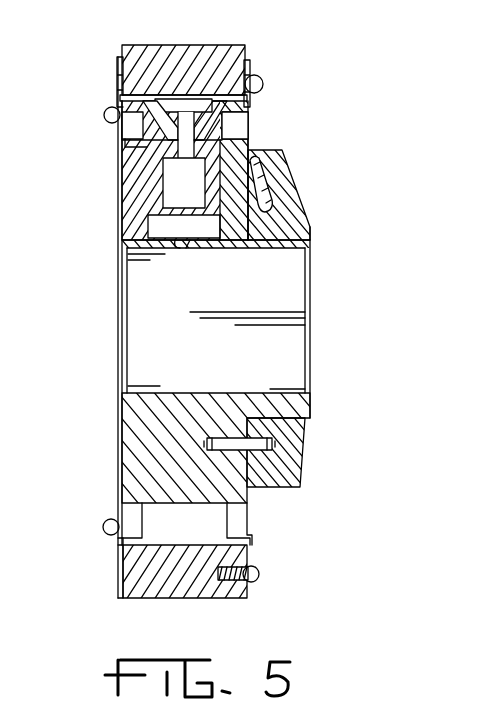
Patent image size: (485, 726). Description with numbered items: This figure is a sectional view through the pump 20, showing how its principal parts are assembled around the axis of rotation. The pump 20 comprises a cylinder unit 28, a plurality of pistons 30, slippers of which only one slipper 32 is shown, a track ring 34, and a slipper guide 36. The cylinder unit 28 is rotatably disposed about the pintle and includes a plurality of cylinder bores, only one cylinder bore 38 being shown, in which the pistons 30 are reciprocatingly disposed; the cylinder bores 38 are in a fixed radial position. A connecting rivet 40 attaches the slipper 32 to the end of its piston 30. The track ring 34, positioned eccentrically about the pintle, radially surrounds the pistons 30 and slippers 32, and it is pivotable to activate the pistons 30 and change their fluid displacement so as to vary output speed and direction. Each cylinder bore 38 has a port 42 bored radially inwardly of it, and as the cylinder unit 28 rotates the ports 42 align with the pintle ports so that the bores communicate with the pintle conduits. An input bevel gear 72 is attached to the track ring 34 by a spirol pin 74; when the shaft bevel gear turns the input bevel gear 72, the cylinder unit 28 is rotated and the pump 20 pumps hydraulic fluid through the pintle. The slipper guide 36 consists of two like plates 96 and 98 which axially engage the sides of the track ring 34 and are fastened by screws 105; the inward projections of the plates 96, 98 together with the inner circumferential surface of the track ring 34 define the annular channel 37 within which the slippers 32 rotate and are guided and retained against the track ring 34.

The pump 20 is at (108, 319).
The cylinder unit 28 is at (169, 456).
The piston 30 is at (150, 184).
The slipper 32 is at (122, 96).
The track ring 34 is at (197, 79).
The slipper guide 36 is at (262, 66).
The annular channel 37 is at (248, 537).
The cylinder bore 38 is at (232, 162).
The connecting rivet 40 is at (122, 150).
The port 42 is at (176, 253).
The input bevel gear 72 is at (280, 192).
The spirol pin 74 is at (263, 449).
The slipper guide plate 96 is at (250, 553).
The slipper guide plate 98 is at (120, 552).
The screw 105 is at (256, 576).